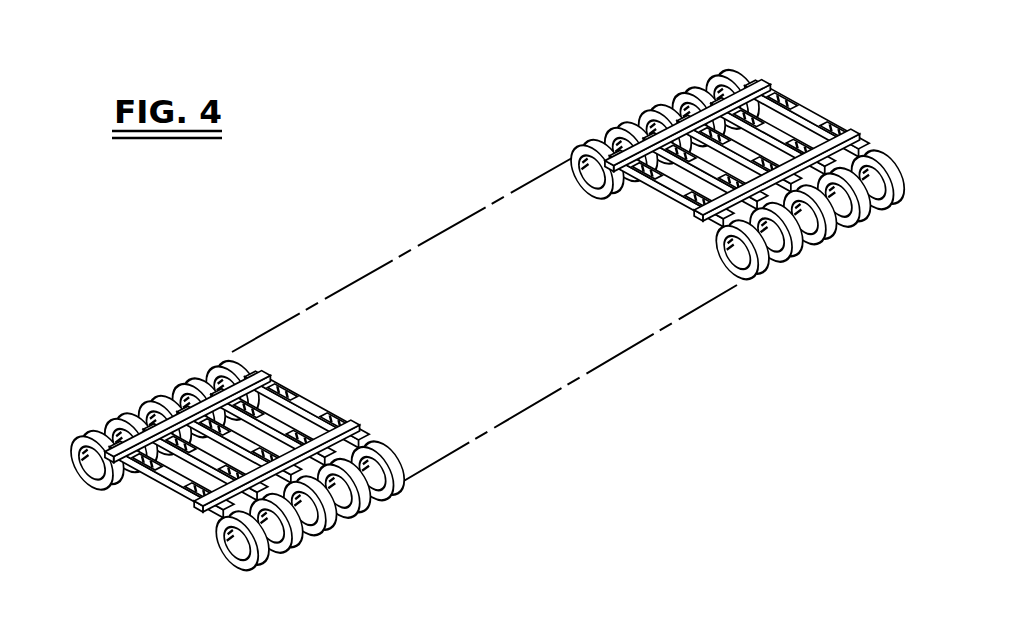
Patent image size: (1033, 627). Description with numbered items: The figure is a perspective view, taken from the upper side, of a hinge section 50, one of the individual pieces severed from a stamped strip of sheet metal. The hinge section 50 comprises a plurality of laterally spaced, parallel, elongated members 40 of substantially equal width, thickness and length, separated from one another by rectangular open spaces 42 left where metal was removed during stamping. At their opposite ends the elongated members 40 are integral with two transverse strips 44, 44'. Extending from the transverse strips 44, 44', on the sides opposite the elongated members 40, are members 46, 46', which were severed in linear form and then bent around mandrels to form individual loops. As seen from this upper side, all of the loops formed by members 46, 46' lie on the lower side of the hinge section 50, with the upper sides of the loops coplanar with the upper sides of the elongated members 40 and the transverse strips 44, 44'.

The elongated members 40 is at (227, 433).
The open spaces 42 is at (748, 148).
The transverse strip 44 is at (232, 492).
The transverse strip 44' is at (731, 96).
The members 46 is at (320, 505).
The members 46' is at (154, 393).
The hinge section 50 is at (739, 145).